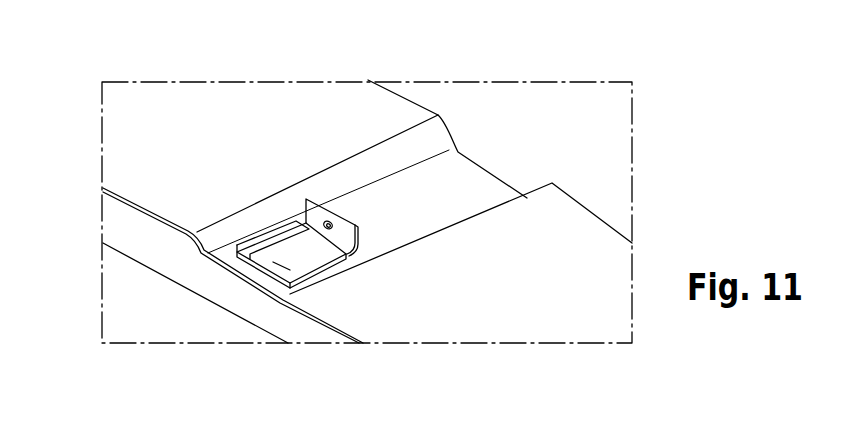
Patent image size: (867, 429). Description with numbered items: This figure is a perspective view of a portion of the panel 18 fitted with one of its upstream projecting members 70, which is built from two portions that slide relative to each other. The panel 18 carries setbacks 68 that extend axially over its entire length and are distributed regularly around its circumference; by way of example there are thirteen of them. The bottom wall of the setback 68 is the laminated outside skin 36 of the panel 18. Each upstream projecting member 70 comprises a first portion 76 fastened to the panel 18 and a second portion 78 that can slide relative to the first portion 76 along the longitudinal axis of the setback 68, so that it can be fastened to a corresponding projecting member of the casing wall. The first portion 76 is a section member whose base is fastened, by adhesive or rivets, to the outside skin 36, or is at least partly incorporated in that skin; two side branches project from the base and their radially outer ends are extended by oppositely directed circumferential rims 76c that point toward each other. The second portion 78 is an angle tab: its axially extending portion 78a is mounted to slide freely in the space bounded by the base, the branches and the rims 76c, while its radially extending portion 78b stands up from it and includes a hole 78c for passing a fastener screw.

The panel 18 is at (81, 126).
The outside skin 36 is at (470, 193).
The setback 68 is at (407, 141).
The upstream projecting member 70 is at (267, 203).
The first portion 76 is at (344, 282).
The circumferential rim 76c is at (290, 266).
The second portion 78 is at (296, 232).
The axially extending portion 78a is at (272, 257).
The radially extending portion 78b is at (315, 204).
The hole 78c is at (330, 222).